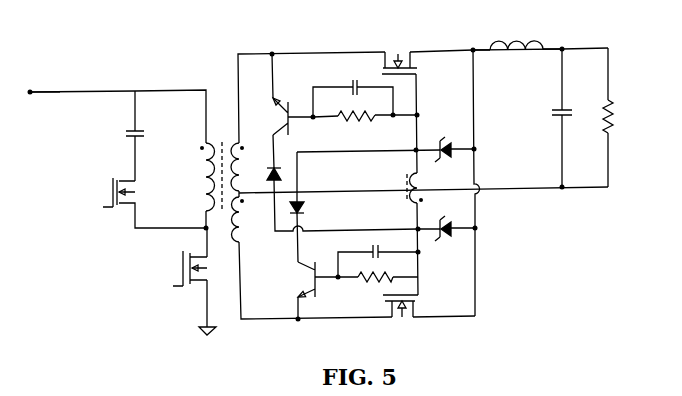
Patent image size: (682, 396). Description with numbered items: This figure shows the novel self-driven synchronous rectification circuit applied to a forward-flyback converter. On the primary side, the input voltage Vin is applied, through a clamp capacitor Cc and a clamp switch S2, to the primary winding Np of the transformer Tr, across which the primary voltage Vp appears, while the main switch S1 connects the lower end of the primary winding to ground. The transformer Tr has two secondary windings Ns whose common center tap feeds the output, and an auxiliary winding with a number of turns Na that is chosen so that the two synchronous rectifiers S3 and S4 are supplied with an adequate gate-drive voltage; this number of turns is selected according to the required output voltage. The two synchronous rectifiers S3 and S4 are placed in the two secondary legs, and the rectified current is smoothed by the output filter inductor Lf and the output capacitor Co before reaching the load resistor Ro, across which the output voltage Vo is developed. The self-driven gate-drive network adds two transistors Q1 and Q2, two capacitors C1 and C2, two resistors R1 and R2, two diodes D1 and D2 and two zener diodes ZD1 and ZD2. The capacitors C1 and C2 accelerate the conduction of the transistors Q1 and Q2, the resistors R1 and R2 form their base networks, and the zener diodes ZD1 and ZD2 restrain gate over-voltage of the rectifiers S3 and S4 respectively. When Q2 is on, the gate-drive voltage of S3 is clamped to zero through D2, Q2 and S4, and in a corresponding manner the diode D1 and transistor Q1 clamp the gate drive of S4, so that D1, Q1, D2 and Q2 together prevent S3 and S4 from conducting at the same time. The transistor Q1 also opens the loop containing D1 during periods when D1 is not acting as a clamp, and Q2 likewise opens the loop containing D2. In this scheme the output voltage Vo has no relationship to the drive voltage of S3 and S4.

The input voltage Vin is at (44, 110).
The clamp capacitor Cc is at (122, 136).
The clamp switch S2 is at (108, 194).
The primary winding voltage Vp is at (170, 156).
The main switch S1 is at (182, 272).
The transformer Tr is at (220, 155).
The primary winding Np is at (197, 177).
The secondary windings Ns is at (247, 192).
The transistor Q1 is at (267, 116).
The diode D1 is at (282, 165).
The diode D2 is at (310, 214).
The transistor Q2 is at (290, 290).
The capacitor C1 is at (343, 78).
The resistor R1 is at (356, 130).
The capacitor C2 is at (361, 244).
The resistor R2 is at (372, 291).
The synchronous rectifier S3 is at (399, 51).
The synchronous rectifier S4 is at (400, 321).
The zener diode ZD1 is at (446, 133).
The zener diode ZD2 is at (448, 218).
The auxiliary winding turns Na is at (397, 187).
The output filter inductor Lf is at (516, 34).
The output capacitor Co is at (551, 114).
The load resistor Ro is at (595, 118).
The output voltage Vo is at (636, 118).